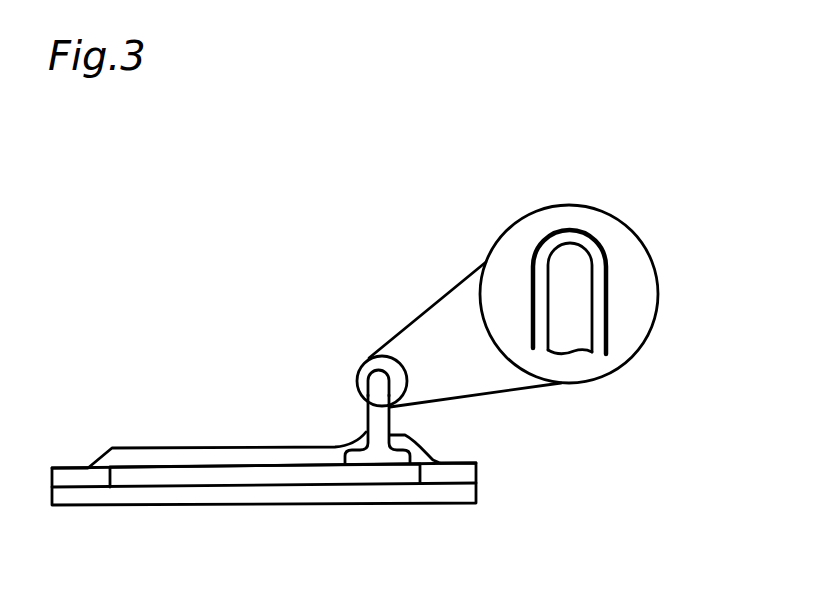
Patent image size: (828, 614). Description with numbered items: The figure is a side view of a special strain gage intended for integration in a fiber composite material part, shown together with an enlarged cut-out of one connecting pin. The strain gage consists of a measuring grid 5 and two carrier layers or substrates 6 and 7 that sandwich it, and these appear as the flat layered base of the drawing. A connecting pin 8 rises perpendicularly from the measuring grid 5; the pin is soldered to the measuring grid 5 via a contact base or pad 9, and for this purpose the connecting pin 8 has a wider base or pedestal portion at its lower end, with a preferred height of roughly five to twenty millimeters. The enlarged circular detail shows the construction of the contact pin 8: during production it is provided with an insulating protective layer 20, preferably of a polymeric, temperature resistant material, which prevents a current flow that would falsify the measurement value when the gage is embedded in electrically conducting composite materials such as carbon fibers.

The measuring grid 5 is at (302, 474).
The carrier layer 6 is at (158, 492).
The carrier layer 7 is at (84, 476).
The connecting pin 8 is at (378, 386).
The contact pad 9 is at (392, 455).
The insulating protective layer 20 is at (597, 263).